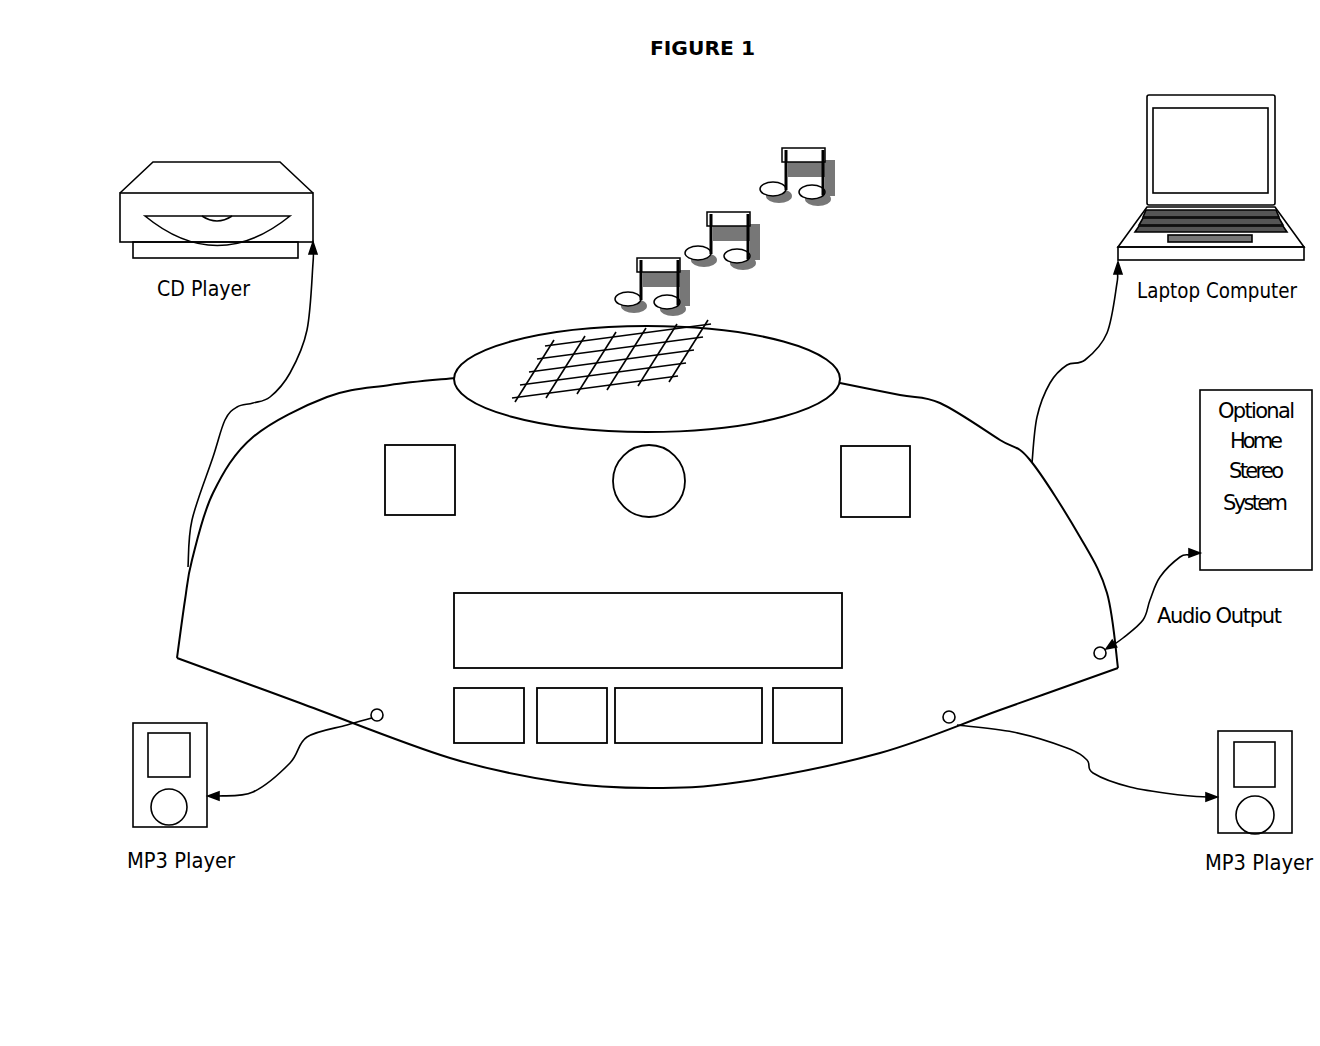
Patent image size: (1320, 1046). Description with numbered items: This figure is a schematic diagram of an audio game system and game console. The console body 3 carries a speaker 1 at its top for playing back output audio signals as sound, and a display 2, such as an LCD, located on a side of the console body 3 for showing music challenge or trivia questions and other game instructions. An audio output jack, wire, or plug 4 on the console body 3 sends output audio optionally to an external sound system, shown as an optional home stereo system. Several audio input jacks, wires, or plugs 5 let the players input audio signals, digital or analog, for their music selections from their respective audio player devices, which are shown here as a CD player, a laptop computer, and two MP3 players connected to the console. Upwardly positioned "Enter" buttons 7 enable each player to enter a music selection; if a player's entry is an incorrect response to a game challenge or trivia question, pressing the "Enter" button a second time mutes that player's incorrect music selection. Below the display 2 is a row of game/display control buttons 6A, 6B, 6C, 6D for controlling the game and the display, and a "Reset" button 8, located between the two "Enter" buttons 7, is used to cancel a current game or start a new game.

The speaker 1 is at (770, 395).
The display 2 is at (660, 648).
The console body 3 is at (962, 608).
The audio output jack, wire, or plug 4 is at (1090, 641).
The audio input jacks, wires, or plugs 5 is at (392, 708).
The game/display control button 6A is at (688, 715).
The game/display control button 6B is at (807, 715).
The game/display control button 6C is at (489, 715).
The game/display control button 6D is at (572, 715).
The "Enter" buttons 7 is at (647, 481).
The "Reset" button 8 is at (649, 481).